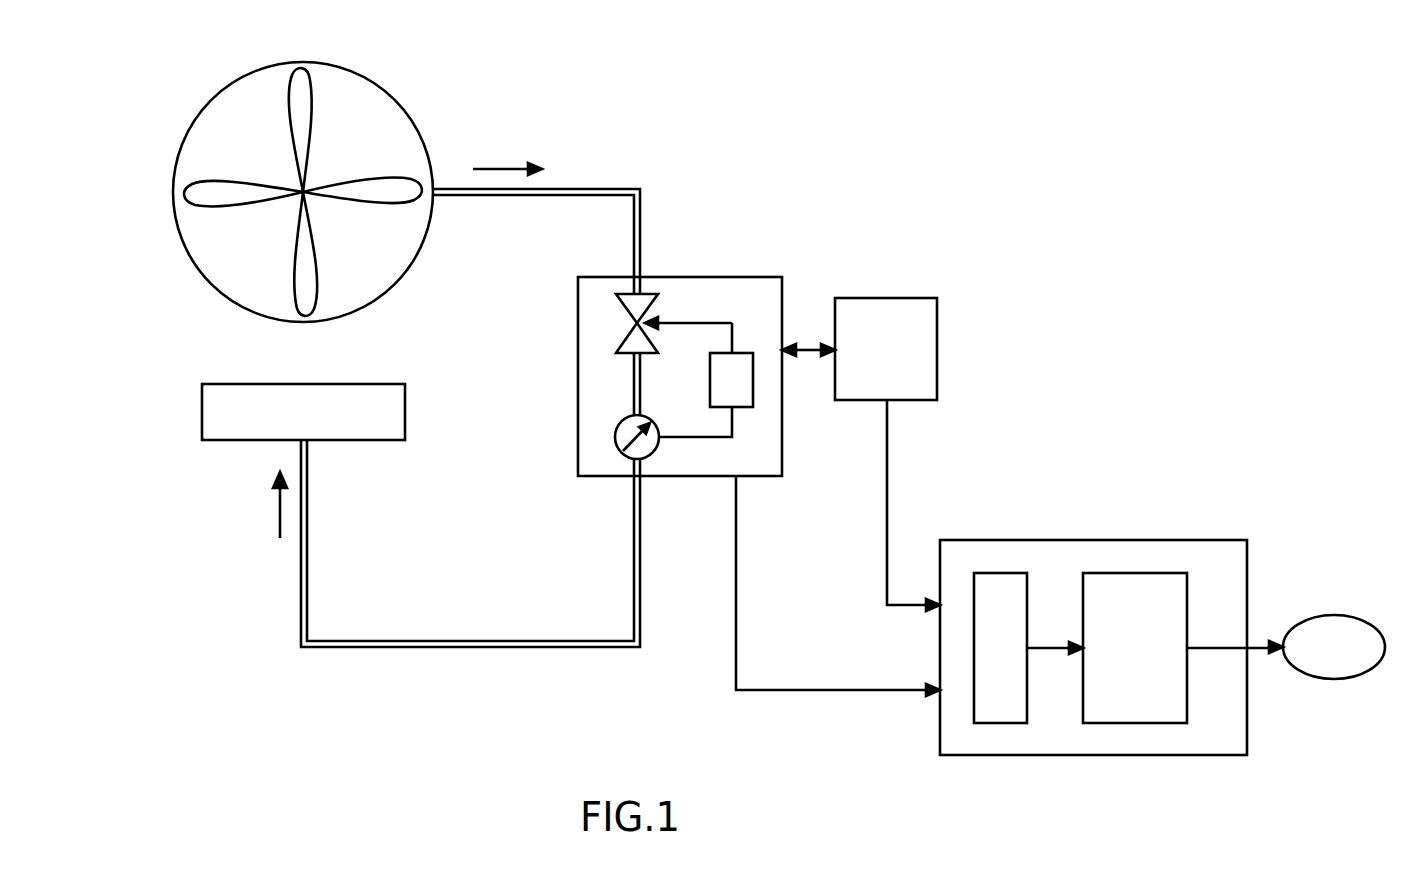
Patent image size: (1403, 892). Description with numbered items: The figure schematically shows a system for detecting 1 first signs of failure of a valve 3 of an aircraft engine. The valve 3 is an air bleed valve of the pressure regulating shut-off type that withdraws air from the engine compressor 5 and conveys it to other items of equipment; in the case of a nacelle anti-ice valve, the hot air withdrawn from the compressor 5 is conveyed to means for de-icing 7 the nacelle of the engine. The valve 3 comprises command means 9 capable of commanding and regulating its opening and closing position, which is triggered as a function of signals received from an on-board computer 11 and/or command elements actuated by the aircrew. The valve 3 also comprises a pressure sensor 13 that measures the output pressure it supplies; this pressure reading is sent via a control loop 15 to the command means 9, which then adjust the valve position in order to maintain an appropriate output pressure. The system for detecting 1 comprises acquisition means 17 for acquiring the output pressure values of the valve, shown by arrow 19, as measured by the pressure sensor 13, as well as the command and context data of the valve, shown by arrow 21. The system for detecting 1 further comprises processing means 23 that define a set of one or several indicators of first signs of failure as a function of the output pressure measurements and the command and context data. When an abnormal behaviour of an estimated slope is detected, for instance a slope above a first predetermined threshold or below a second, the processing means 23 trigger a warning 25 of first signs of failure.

The system for detecting 1 is at (1141, 790).
The valve 3 is at (740, 277).
The compressor 5 is at (392, 92).
The means for de-icing 7 is at (232, 440).
The command means 9 is at (753, 397).
The on-board computer 11 is at (880, 298).
The pressure sensor 13 is at (655, 452).
The control loop 15 is at (697, 323).
The acquisition means 17 is at (1000, 573).
The arrow 19 is at (736, 565).
The arrow 21 is at (887, 450).
The processing means 23 is at (1130, 573).
The warning 25 is at (1320, 615).